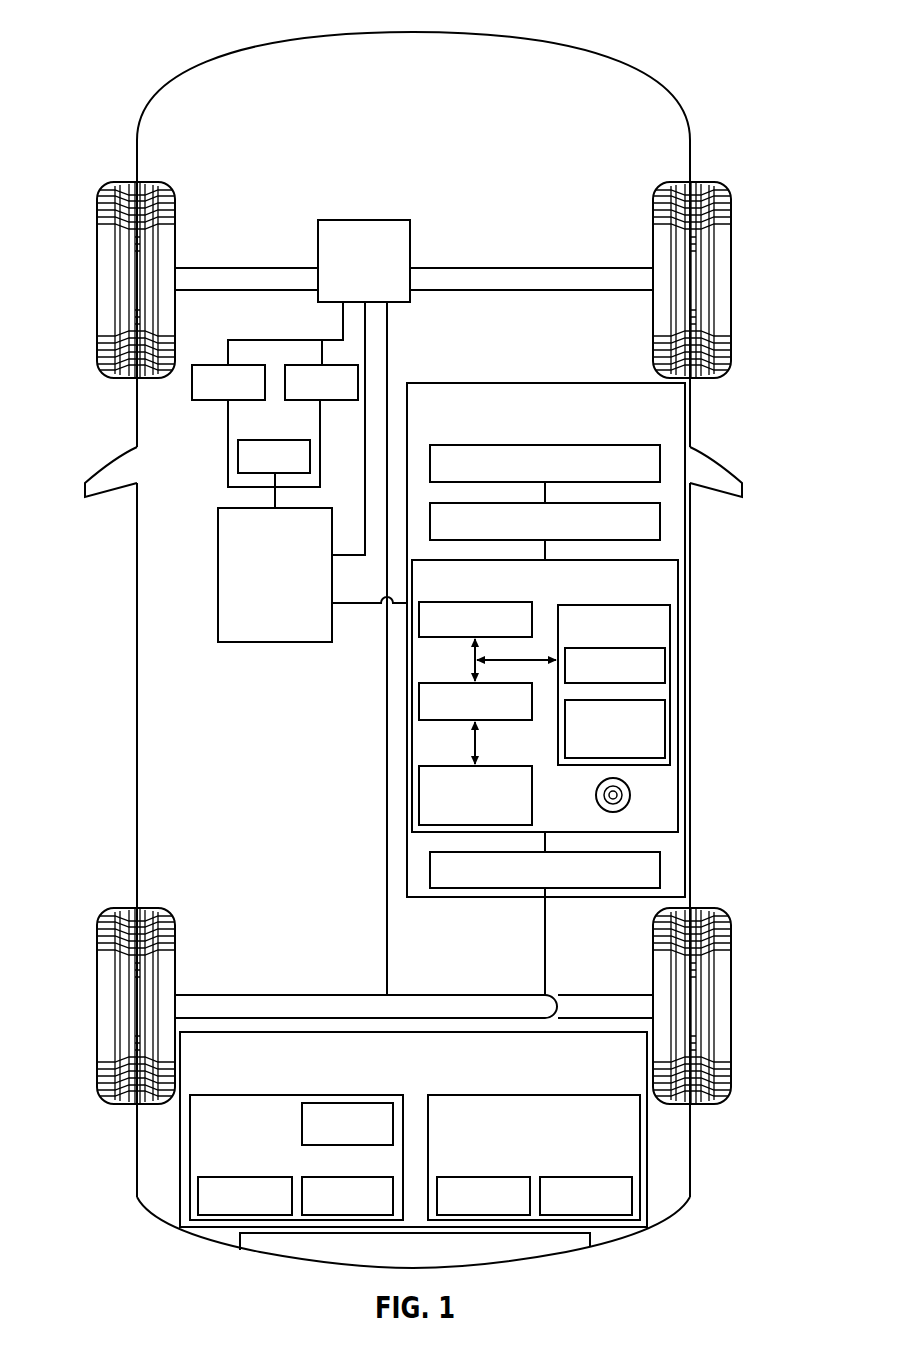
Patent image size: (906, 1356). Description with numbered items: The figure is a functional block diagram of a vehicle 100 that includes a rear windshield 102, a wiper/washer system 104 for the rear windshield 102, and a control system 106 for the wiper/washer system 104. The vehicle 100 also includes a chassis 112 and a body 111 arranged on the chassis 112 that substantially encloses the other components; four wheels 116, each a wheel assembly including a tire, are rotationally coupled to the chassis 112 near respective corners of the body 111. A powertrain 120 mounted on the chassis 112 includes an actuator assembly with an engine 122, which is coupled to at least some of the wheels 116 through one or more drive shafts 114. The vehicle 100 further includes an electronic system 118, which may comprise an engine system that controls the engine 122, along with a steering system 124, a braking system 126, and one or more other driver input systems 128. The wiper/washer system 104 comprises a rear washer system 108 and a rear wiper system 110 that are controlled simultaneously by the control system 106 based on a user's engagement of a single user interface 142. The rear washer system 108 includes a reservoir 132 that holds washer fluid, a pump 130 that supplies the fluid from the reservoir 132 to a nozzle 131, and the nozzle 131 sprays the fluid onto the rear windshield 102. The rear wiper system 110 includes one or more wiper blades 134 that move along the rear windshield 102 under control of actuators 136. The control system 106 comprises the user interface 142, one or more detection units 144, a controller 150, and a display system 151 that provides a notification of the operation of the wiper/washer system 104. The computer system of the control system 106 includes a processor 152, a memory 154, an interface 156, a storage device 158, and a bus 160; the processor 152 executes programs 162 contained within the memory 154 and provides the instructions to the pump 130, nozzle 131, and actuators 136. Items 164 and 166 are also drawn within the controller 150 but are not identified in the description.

The vehicle 100 is at (110, 38).
The rear windshield 102 is at (548, 1243).
The wiper/washer system 104 is at (295, 1032).
The control system 106 is at (458, 383).
The rear washer system 108 is at (260, 1095).
The rear wiper system 110 is at (497, 1095).
The body 111 is at (137, 633).
The chassis 112 is at (385, 931).
The drive shafts 114 is at (247, 268).
The wheels 116 is at (97, 280).
The electronic system 118 is at (295, 613).
The powertrain 120 is at (345, 246).
The engine 122 is at (322, 203).
The steering system 124 is at (220, 365).
The braking system 126 is at (300, 365).
The other driver input systems 128 is at (300, 440).
The pump 130 is at (258, 1177).
The nozzle 131 is at (347, 1103).
The reservoir 132 is at (350, 1177).
The wiper blades 134 is at (494, 1177).
The actuators 136 is at (587, 1177).
The user interface 142 is at (660, 465).
The detection units 144 is at (660, 522).
The controller 150 is at (678, 600).
The display system 151 is at (660, 868).
The processor 152 is at (419, 618).
The memory 154 is at (670, 618).
The interface 156 is at (419, 702).
The storage device 158 is at (419, 795).
The bus 160 is at (473, 655).
The programs 162 is at (665, 665).
The data 164 is at (665, 730).
The removable storage medium 166 is at (630, 795).